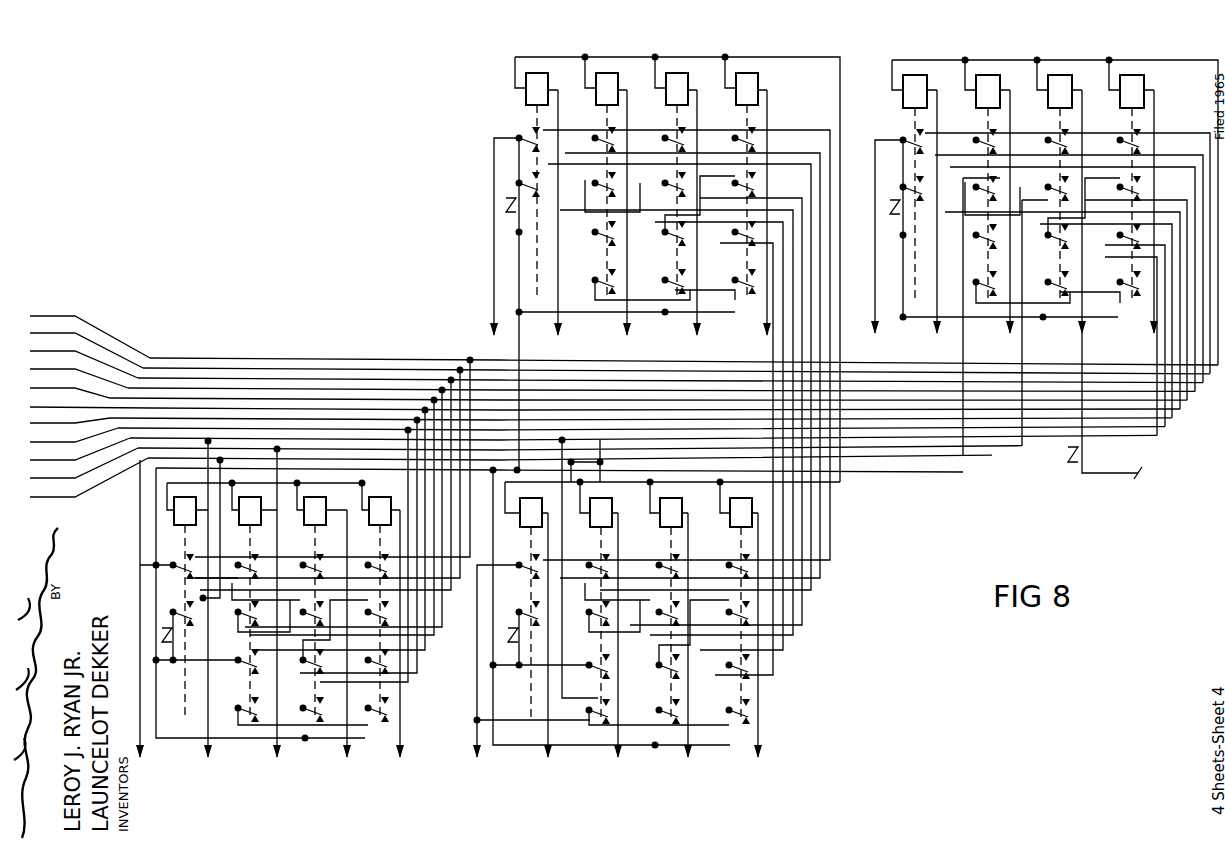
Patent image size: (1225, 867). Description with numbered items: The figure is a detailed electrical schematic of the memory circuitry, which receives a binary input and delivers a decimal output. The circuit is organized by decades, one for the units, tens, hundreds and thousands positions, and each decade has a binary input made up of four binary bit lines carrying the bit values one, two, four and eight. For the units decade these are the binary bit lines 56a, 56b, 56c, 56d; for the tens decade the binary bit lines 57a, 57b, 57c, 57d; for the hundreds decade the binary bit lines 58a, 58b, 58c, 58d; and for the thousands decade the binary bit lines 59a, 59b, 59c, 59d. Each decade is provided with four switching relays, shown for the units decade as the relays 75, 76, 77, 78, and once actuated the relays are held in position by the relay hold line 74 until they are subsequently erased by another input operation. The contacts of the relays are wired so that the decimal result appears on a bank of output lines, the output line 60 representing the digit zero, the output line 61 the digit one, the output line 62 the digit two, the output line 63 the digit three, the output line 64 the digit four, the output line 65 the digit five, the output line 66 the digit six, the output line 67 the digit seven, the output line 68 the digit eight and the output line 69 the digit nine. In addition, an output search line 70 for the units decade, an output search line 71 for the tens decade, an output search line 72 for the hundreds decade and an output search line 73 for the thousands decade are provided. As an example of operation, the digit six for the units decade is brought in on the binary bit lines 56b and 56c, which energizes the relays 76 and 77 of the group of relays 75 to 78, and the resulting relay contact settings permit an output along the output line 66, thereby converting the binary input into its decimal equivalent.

The relay hold line 74 is at (30, 300).
The output line 69 is at (88, 338).
The output line 61 is at (105, 363).
The output line 63 is at (133, 387).
The output line 67 is at (177, 399).
The output line 66 is at (186, 439).
The output line 65 is at (252, 409).
The output line 68 is at (279, 419).
The output line 60 is at (306, 429).
The output line 64 is at (342, 448).
The output line 62 is at (372, 459).
The output search line 70 is at (499, 248).
The output search line 71 is at (882, 249).
The output search line 72 is at (150, 621).
The output search line 73 is at (528, 673).
The switching relay 75 is at (540, 73).
The switching relay 76 is at (606, 73).
The switching relay 77 is at (679, 73).
The switching relay 78 is at (749, 73).
The binary bit line 56a is at (557, 224).
The binary bit line 56b is at (617, 224).
The binary bit line 56c is at (695, 224).
The binary bit line 56d is at (755, 224).
The binary bit line 57a is at (939, 224).
The binary bit line 57b is at (1009, 224).
The binary bit line 57c is at (1105, 284).
The binary bit line 57d is at (1146, 224).
The binary bit line 58a is at (207, 611).
The binary bit line 58b is at (269, 615).
The binary bit line 58c is at (335, 646).
The binary bit line 58d is at (401, 646).
The binary bit line 59a is at (552, 647).
The binary bit line 59b is at (620, 647).
The binary bit line 59c is at (691, 647).
The binary bit line 59d is at (759, 647).